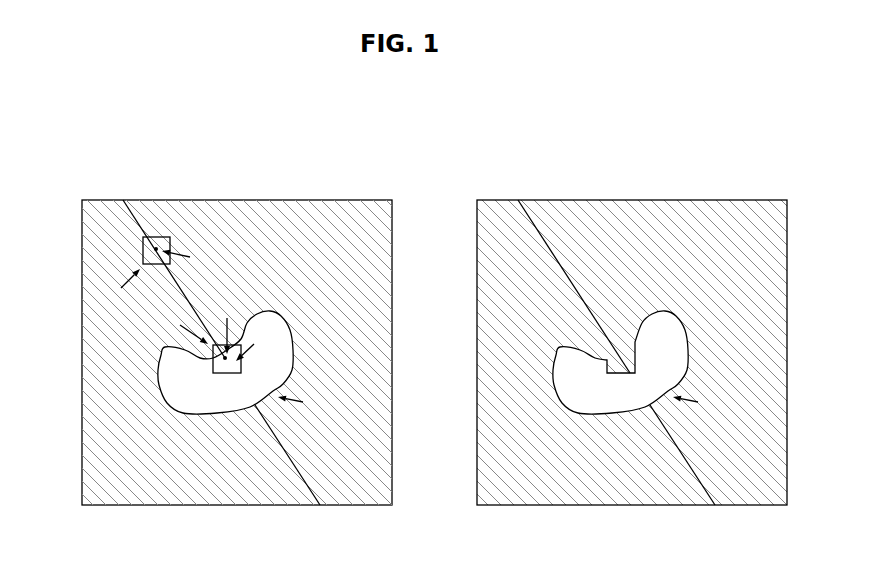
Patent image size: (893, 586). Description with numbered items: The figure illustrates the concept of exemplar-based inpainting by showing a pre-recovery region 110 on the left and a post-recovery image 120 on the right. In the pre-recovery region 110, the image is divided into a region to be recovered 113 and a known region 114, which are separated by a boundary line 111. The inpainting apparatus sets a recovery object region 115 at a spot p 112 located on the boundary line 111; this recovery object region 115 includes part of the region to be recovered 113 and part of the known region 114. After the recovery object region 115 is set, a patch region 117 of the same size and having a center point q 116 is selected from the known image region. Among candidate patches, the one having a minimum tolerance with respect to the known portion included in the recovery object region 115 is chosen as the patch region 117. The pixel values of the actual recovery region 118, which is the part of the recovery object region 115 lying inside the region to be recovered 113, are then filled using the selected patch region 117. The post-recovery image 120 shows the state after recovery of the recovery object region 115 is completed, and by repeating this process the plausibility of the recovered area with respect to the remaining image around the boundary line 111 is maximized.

The pre-recovery region 110 is at (263, 122).
The post-recovery image 120 is at (658, 123).
The boundary line 111 is at (343, 400).
The spot p 112 is at (230, 297).
The region to be recovered 113 is at (182, 407).
The known region 114 is at (102, 502).
The recovery object region 115 is at (153, 320).
The center point q 116 is at (205, 250).
The patch region 117 is at (98, 293).
The actual recovery region 118 is at (290, 332).